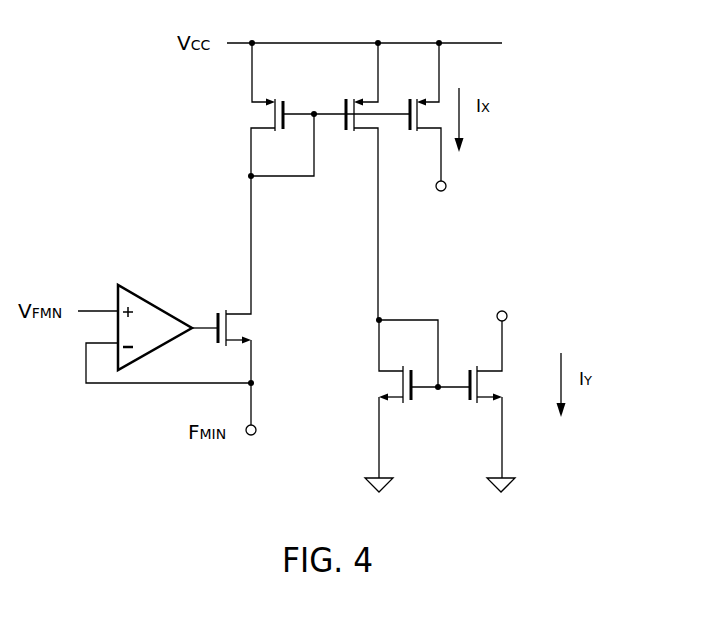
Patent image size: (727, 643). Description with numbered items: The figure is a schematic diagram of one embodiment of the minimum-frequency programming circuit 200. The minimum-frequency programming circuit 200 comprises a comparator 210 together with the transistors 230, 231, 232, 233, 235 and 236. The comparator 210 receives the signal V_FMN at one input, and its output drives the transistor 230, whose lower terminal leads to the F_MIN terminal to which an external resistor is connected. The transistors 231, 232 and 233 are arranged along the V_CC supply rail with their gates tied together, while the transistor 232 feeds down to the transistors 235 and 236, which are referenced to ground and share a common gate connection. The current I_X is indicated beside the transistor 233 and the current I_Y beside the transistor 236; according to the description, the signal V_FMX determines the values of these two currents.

The minimum-frequency programming circuit 200 is at (618, 115).
The comparator 210 is at (153, 300).
The transistor 230 is at (260, 330).
The transistor 231 is at (292, 102).
The transistor 232 is at (349, 133).
The transistor 233 is at (413, 135).
The transistor 235 is at (365, 370).
The transistor 236 is at (508, 380).